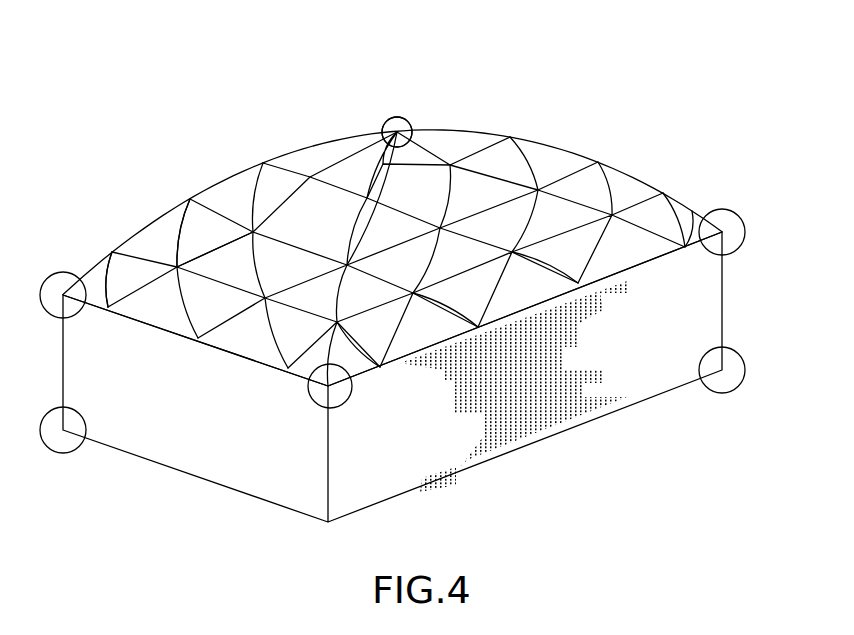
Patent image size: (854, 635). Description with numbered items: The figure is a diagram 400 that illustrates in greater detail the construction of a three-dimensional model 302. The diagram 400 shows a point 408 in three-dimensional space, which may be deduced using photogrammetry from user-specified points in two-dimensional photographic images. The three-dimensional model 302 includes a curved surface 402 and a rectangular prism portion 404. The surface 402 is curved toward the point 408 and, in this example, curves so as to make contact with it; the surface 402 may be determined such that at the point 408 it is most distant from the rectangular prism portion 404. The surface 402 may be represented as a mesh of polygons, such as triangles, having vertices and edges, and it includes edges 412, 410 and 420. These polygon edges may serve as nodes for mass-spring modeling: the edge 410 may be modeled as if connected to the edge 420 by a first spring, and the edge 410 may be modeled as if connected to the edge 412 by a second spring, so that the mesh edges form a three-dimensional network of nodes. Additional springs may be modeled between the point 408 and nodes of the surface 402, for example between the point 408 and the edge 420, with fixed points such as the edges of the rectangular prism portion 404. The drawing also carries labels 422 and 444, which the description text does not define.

The shelter structure 302 is at (95, 135).
The shelter assembly 400 is at (688, 104).
The dome roof frame 402 is at (760, 112).
The base enclosure 404 is at (760, 230).
The apex hub 408 is at (397, 117).
The frame member 410 is at (172, 243).
The frame member 412 is at (155, 258).
The frame member 420 is at (222, 227).
The lattice frame 422 is at (392, 216).
The connector 444 is at (413, 119).